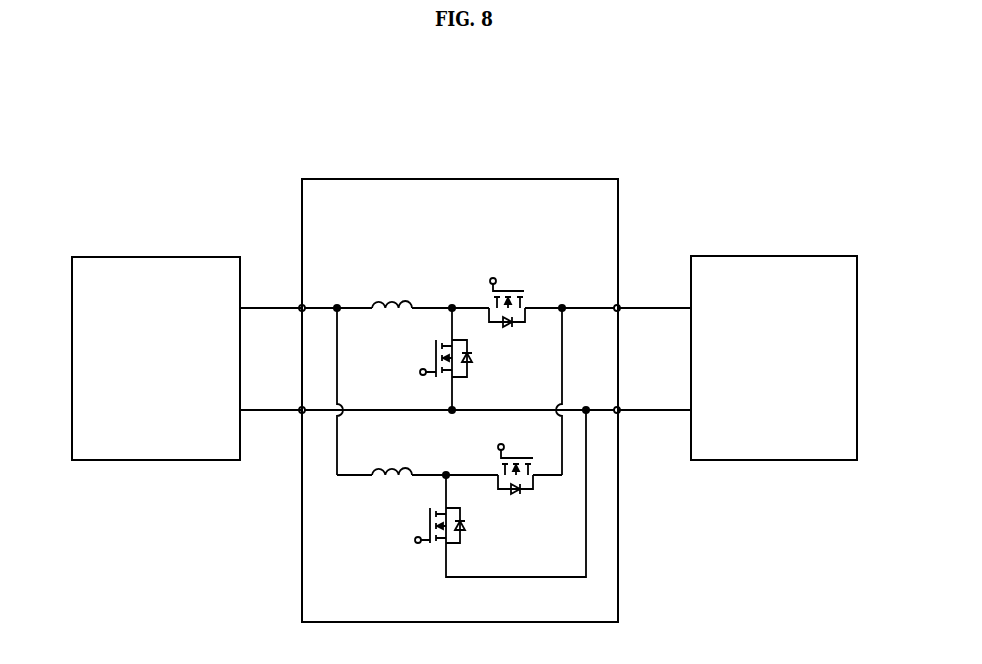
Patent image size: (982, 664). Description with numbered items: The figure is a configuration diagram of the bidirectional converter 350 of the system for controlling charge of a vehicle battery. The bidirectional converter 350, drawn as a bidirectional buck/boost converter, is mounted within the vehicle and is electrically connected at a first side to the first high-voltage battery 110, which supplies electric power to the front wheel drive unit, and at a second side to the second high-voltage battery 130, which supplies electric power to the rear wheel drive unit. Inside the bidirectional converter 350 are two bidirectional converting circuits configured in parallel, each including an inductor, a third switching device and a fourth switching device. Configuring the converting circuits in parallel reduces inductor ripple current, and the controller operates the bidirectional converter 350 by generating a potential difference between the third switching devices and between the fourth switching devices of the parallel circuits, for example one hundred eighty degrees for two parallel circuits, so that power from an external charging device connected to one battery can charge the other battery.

The first high-voltage battery 110 is at (168, 257).
The second high-voltage battery 130 is at (780, 256).
The bidirectional converter 350 is at (455, 179).